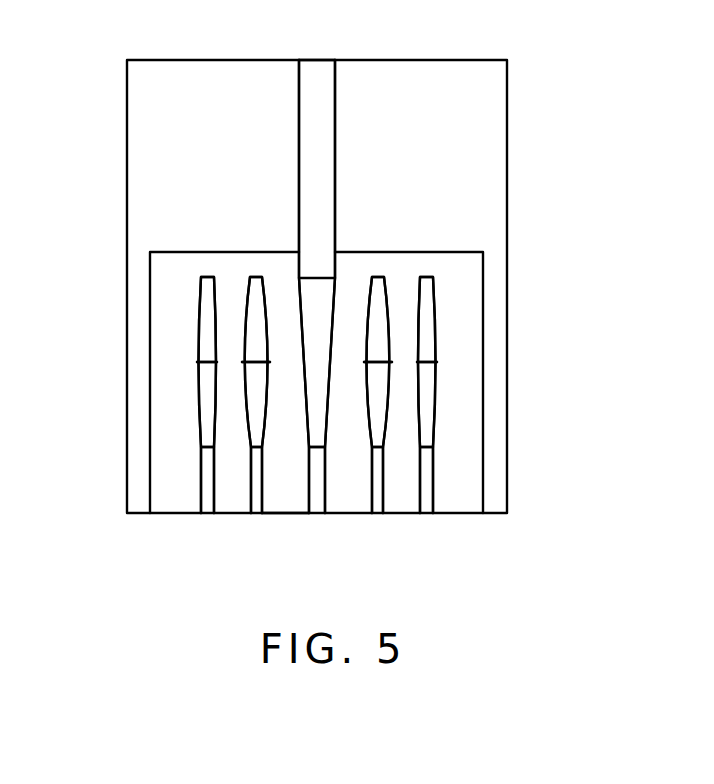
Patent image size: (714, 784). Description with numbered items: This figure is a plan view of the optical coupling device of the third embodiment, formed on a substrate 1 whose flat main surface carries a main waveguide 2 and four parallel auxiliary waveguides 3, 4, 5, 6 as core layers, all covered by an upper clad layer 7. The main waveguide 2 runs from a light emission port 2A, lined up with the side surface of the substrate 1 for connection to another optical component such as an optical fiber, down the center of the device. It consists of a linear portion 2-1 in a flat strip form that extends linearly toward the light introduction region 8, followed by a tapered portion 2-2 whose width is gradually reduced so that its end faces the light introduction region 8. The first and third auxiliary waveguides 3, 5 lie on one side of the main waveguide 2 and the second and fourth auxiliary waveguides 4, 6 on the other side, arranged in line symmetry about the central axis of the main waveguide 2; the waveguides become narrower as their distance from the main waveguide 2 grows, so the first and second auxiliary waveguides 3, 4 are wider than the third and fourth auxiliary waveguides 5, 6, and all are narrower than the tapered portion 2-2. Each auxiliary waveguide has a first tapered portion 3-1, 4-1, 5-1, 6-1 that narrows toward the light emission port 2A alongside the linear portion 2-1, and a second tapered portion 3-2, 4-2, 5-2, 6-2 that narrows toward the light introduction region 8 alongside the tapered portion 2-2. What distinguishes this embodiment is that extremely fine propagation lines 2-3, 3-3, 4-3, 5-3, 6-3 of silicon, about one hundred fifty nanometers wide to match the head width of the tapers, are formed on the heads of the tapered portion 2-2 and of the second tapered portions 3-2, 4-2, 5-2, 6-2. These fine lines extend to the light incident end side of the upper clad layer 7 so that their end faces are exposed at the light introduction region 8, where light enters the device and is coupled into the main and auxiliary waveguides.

The substrate 1 is at (198, 60).
The main waveguide 2 is at (299, 142).
The light emission port 2A is at (317, 59).
The linear portion 2-1 is at (318, 162).
The tapered portion 2-2 is at (315, 418).
The extremely fine propagation line 2-3 is at (318, 515).
The first auxiliary waveguide 3 is at (242, 384).
The first tapered portion of first auxiliary waveguide 3-1 is at (258, 323).
The second tapered portion of first auxiliary waveguide 3-2 is at (255, 432).
The extremely fine propagation line of first auxiliary waveguide 3-3 is at (255, 515).
The second auxiliary waveguide 4 is at (393, 383).
The first tapered portion of second auxiliary waveguide 4-1 is at (384, 325).
The second tapered portion of second auxiliary waveguide 4-2 is at (382, 408).
The extremely fine propagation line of second auxiliary waveguide 4-3 is at (378, 515).
The third auxiliary waveguide 5 is at (197, 356).
The first tapered portion of third auxiliary waveguide 5-1 is at (202, 300).
The second tapered portion of third auxiliary waveguide 5-2 is at (203, 403).
The extremely fine propagation line of third auxiliary waveguide 5-3 is at (207, 515).
The fourth auxiliary waveguide 6 is at (438, 352).
The first tapered portion of fourth auxiliary waveguide 6-1 is at (432, 300).
The second tapered portion of fourth auxiliary waveguide 6-2 is at (428, 403).
The extremely fine propagation line of fourth auxiliary waveguide 6-3 is at (428, 515).
The upper clad layer 7 is at (150, 266).
The light introduction region 8 is at (285, 514).